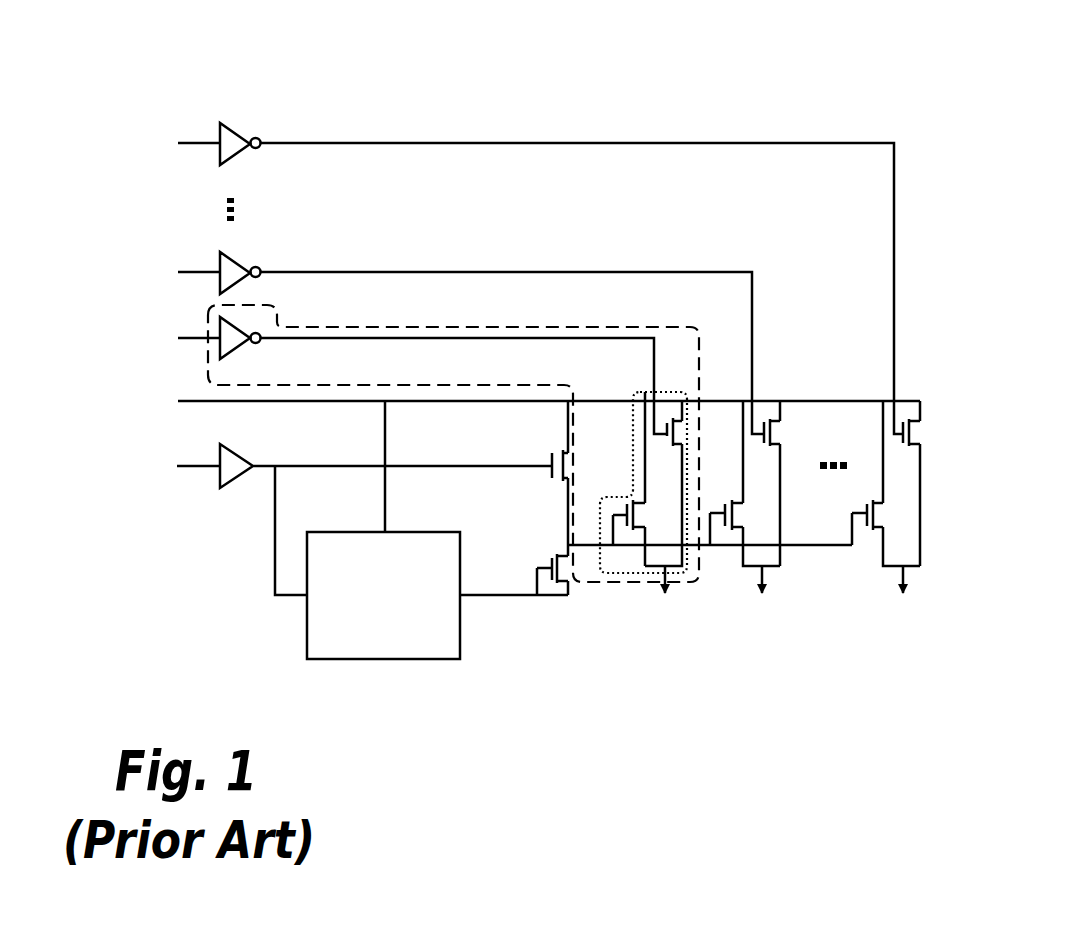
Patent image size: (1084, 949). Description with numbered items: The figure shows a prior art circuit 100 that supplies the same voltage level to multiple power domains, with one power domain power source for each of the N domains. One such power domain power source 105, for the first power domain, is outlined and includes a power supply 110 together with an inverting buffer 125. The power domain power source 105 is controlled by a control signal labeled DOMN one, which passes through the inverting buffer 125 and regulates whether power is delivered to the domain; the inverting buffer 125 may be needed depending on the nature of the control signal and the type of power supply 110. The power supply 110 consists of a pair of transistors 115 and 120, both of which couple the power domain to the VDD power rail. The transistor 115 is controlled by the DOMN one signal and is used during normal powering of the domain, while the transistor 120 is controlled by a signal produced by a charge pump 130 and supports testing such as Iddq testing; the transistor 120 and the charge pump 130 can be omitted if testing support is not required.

The circuit 100 is at (812, 95).
The power domain power source 105 is at (567, 325).
The power supply 110 is at (643, 391).
The transistor 115 is at (680, 446).
The transistor 120 is at (638, 529).
The inverting buffer 125 is at (242, 344).
The charge pump 130 is at (363, 530).